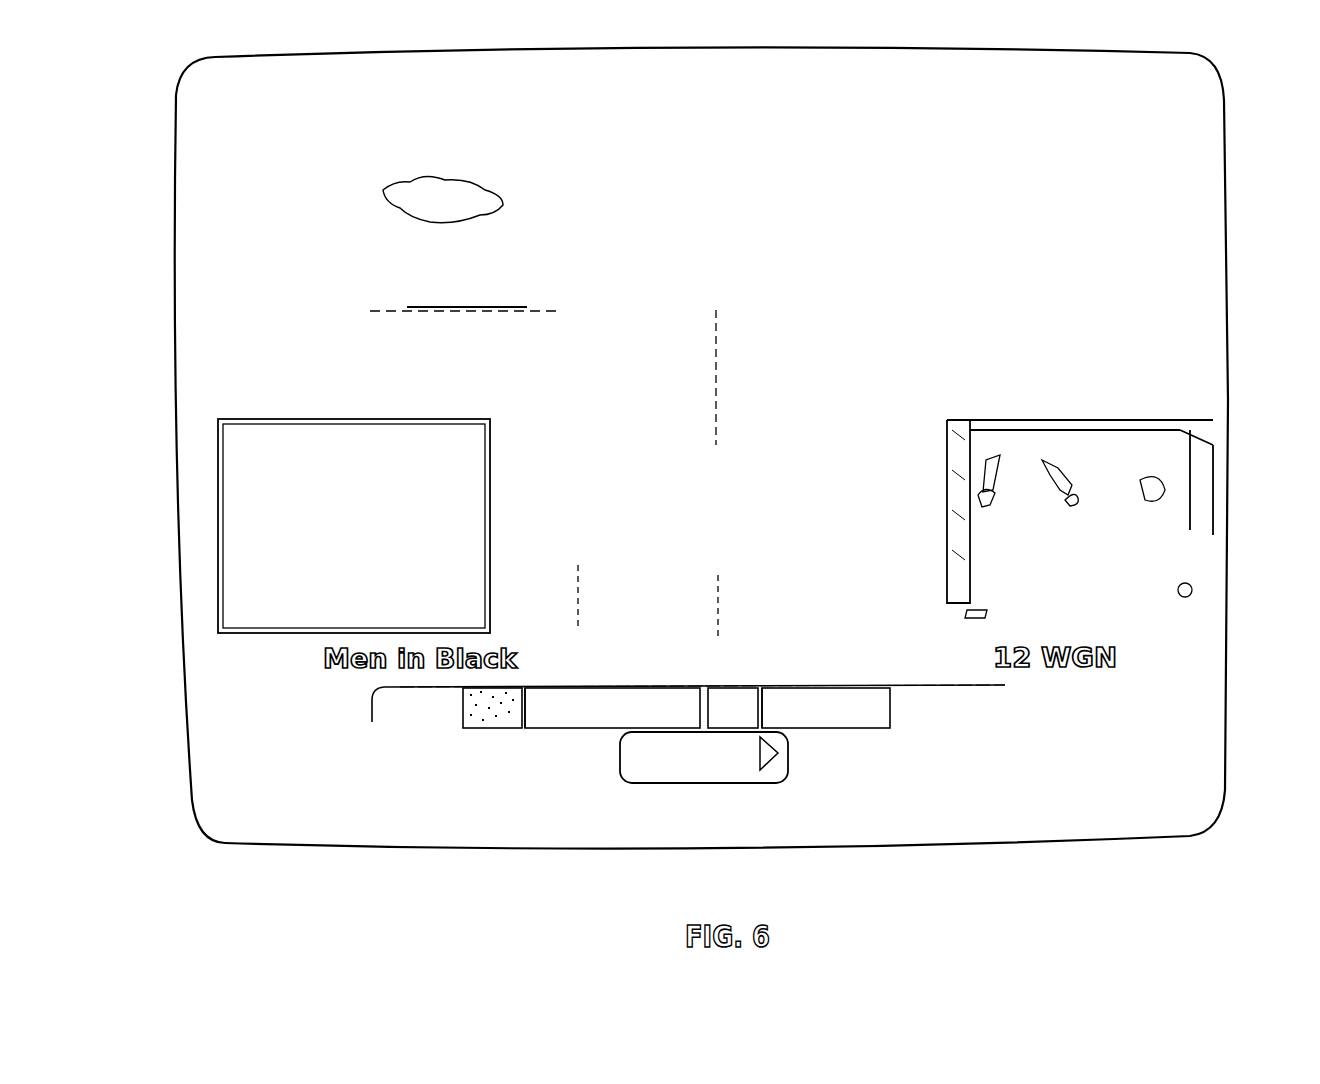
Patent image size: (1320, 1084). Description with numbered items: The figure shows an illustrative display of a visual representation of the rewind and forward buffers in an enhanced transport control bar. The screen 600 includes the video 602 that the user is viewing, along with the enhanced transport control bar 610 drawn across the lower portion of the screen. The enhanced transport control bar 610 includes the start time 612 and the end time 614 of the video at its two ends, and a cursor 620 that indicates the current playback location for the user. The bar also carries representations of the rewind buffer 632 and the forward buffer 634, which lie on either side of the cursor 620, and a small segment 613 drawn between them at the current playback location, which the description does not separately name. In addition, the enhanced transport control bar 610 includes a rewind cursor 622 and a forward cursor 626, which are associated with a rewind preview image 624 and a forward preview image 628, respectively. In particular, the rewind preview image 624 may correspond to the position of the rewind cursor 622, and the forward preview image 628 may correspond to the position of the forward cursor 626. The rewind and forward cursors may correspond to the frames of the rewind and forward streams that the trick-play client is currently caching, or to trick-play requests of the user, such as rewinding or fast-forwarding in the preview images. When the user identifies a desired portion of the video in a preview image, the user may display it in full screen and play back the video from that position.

The screen 600 is at (1244, 116).
The video 602 is at (234, 226).
The enhanced transport control bar 610 is at (268, 692).
The start time 612 is at (278, 713).
The current program slot 613 is at (660, 782).
The end time 614 is at (1120, 720).
The cursor 620 is at (727, 773).
The rewind cursor 622 is at (517, 717).
The rewind preview image 624 is at (234, 485).
The forward cursor 626 is at (763, 700).
The forward preview image 628 is at (1213, 473).
The rewind buffer 632 is at (620, 705).
The forward buffer 634 is at (850, 700).